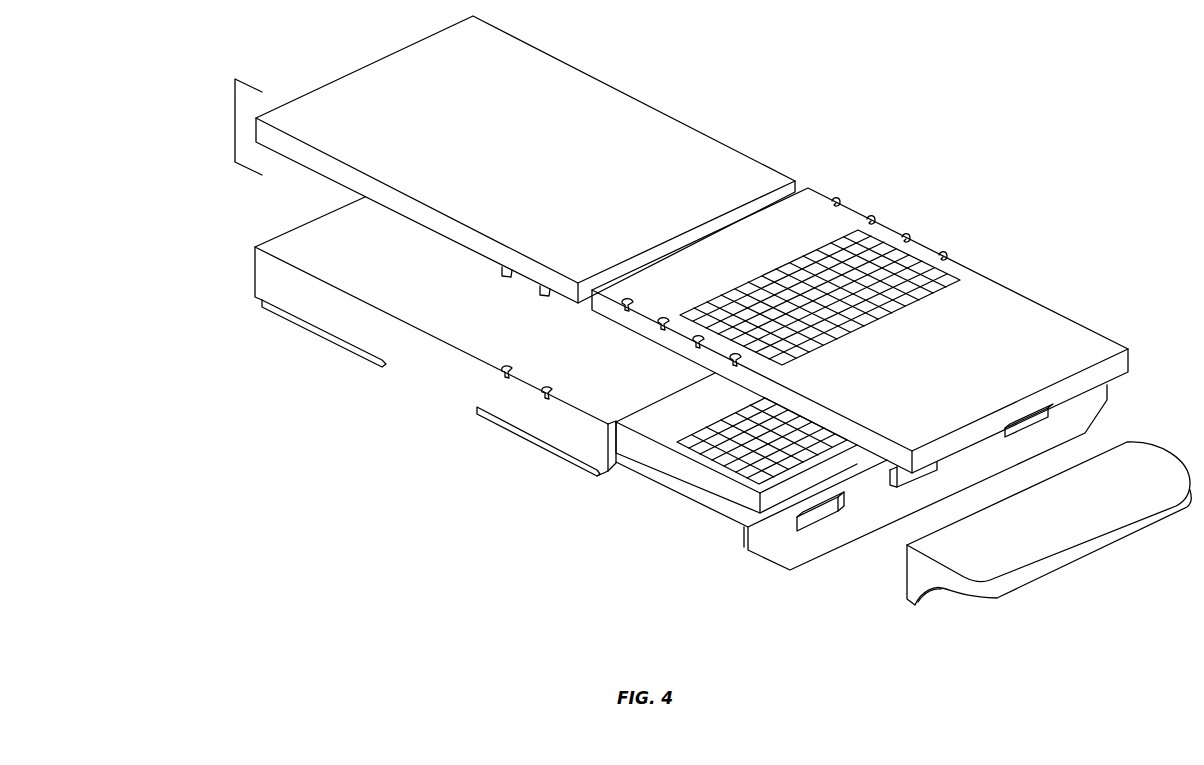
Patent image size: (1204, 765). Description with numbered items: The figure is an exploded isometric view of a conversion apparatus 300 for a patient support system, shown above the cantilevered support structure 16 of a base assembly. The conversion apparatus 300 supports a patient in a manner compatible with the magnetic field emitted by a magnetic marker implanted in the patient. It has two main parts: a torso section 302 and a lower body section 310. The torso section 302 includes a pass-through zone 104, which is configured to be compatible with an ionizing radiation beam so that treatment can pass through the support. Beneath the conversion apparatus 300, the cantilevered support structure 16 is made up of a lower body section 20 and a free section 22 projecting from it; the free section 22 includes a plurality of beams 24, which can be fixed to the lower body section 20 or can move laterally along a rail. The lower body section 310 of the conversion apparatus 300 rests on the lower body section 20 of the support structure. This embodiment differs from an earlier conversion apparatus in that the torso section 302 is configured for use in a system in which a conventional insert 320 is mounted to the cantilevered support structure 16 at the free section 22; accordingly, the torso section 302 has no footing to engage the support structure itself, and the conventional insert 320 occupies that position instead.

The conversion apparatus 300 is at (235, 122).
The lower body section 310 is at (592, 95).
The torso section 302 is at (1086, 341).
The pass-through zone 104 is at (880, 242).
The lower body section 20 is at (446, 370).
The cantilevered support structure 16 is at (592, 439).
The beams 24 is at (658, 477).
The conventional insert 320 is at (719, 482).
The free section 22 is at (726, 526).